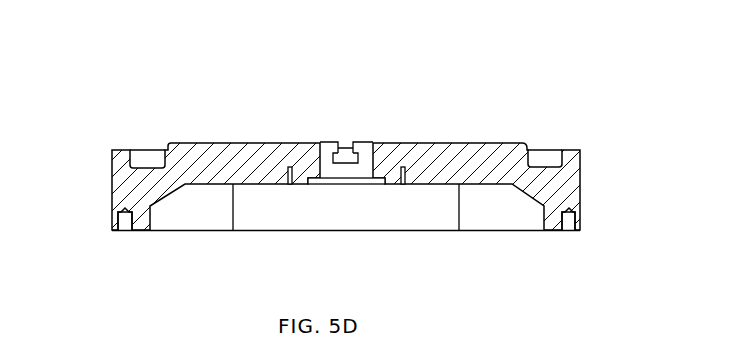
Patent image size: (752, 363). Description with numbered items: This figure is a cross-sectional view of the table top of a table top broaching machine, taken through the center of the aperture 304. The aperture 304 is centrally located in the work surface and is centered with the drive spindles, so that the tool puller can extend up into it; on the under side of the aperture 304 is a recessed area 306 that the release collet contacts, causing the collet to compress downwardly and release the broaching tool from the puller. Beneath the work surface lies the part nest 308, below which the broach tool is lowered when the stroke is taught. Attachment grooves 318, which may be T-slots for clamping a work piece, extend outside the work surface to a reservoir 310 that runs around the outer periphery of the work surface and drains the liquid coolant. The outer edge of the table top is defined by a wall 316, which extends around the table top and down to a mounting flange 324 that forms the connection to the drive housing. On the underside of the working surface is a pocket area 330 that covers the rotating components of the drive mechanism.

The aperture 304 is at (367, 157).
The recessed area 306 is at (367, 185).
The part nest 308 is at (325, 157).
The reservoir 310 is at (146, 157).
The wall 316 is at (582, 173).
The attachment grooves 318 is at (566, 231).
The mounting flange 324 is at (124, 231).
The pocket area 330 is at (232, 236).